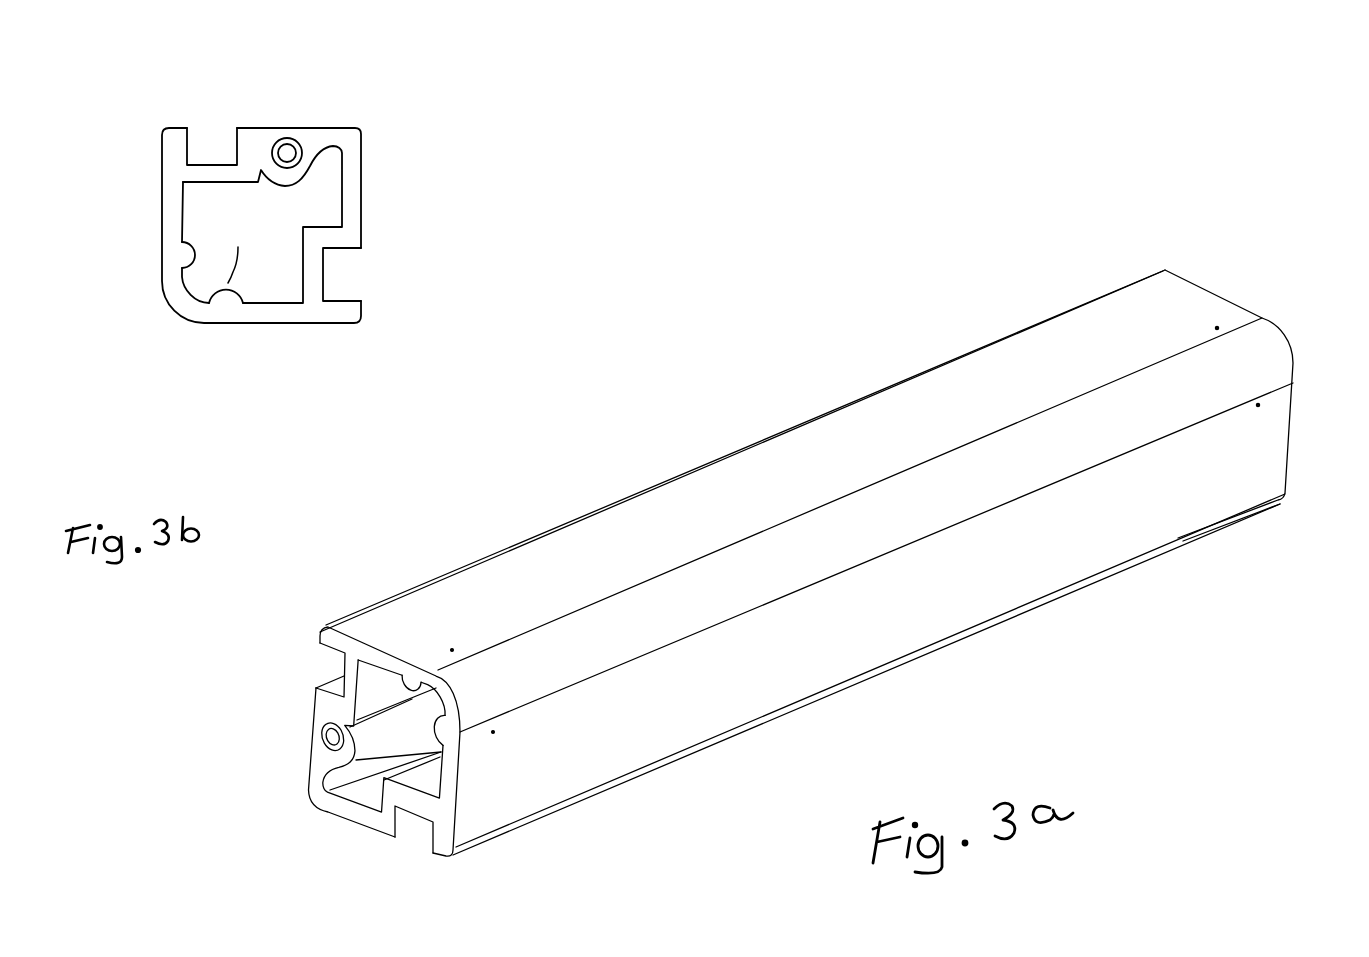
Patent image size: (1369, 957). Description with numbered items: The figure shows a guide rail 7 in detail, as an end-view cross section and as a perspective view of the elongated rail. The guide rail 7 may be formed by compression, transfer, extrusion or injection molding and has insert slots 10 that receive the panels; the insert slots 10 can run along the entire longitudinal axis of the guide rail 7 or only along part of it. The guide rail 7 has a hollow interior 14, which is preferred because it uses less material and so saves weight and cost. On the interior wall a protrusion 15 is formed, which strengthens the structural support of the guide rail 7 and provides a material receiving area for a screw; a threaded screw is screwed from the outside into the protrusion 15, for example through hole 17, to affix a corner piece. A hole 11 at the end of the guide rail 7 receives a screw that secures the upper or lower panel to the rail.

In FIG. 3B, the guide rail 7 is at (343, 78).
In FIG. 3A, the guide rail 7 is at (1137, 606).
In FIG. 3B, the insert slot 10 is at (217, 125).
In FIG. 3A, the insert slot 10 is at (307, 660).
In FIG. 3B, the hole 11 is at (290, 150).
In FIG. 3A, the hole 11 is at (324, 737).
In FIG. 3B, the hollow interior 14 is at (212, 212).
In FIG. 3B, the protrusion 15 is at (201, 256).
In FIG. 3A, the protrusion 15 is at (446, 739).
In FIG. 3A, the hole 17 is at (1228, 320).